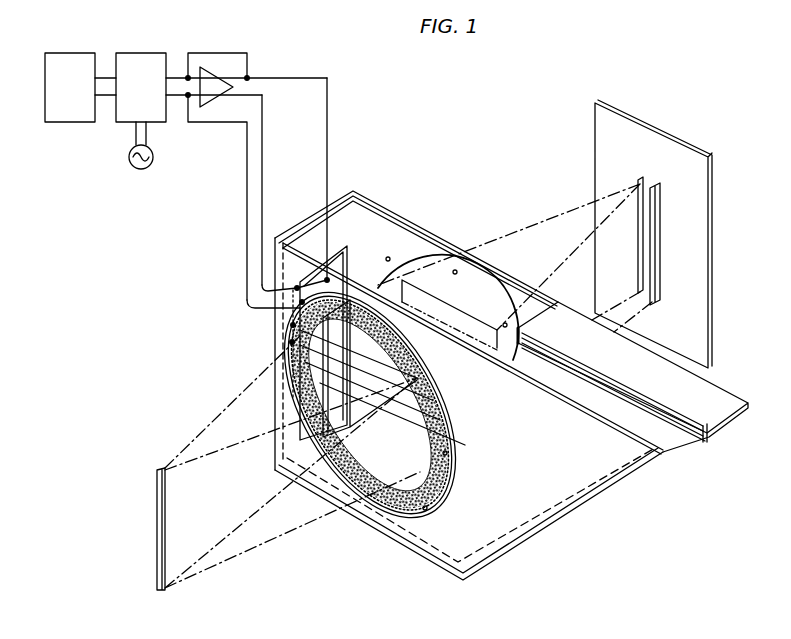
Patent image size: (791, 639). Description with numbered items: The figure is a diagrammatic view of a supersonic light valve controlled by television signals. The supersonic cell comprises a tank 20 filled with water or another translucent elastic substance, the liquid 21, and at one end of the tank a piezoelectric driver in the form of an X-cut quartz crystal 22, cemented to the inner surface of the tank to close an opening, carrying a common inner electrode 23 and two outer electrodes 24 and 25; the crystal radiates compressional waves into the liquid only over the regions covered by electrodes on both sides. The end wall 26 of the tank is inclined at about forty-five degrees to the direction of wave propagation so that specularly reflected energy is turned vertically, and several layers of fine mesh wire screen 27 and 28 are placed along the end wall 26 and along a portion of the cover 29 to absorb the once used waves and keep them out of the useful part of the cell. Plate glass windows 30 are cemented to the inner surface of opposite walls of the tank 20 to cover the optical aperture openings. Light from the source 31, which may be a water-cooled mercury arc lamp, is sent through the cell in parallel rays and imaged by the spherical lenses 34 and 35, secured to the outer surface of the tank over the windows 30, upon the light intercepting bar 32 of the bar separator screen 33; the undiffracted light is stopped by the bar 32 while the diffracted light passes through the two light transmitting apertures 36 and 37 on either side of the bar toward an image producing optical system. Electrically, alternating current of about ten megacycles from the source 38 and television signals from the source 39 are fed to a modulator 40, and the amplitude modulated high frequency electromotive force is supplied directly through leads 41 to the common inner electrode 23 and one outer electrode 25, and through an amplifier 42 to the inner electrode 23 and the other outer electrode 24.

The tank 20 is at (403, 218).
The liquid 21 is at (378, 200).
The X-cut quartz crystal 22 is at (322, 254).
The inner electrode 23 is at (310, 297).
The outer electrode 24 is at (287, 272).
The outer electrode 25 is at (285, 363).
The end wall 26 is at (680, 440).
The wire screen 27 is at (667, 442).
The wire screen 28 is at (673, 412).
The cover 29 is at (700, 383).
The plate glass windows 30 is at (428, 299).
The light source 31 is at (157, 514).
The light intercepting bar 32 is at (647, 183).
The bar separator screen 33 is at (713, 210).
The spherical lens 34 is at (443, 467).
The spherical lens 35 is at (495, 302).
The light transmitting aperture 36 is at (641, 266).
The light transmitting aperture 37 is at (659, 268).
The alternating current source 38 is at (150, 165).
The television signal source 39 is at (63, 123).
The modulator 40 is at (145, 53).
The leads 41 is at (173, 90).
The amplifier 42 is at (210, 77).